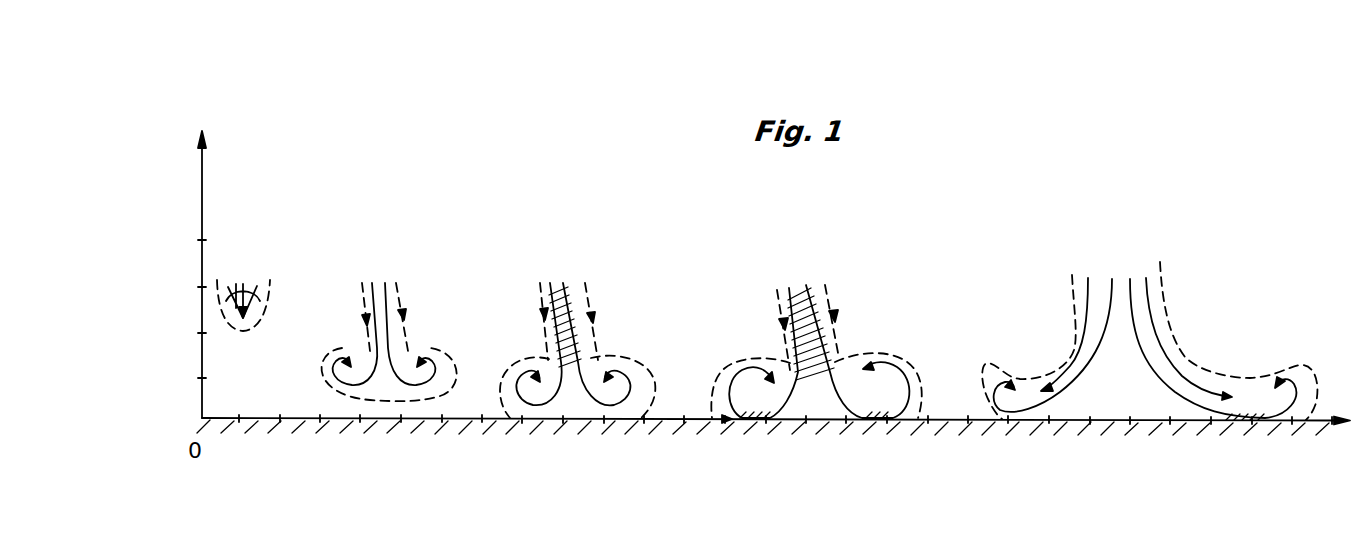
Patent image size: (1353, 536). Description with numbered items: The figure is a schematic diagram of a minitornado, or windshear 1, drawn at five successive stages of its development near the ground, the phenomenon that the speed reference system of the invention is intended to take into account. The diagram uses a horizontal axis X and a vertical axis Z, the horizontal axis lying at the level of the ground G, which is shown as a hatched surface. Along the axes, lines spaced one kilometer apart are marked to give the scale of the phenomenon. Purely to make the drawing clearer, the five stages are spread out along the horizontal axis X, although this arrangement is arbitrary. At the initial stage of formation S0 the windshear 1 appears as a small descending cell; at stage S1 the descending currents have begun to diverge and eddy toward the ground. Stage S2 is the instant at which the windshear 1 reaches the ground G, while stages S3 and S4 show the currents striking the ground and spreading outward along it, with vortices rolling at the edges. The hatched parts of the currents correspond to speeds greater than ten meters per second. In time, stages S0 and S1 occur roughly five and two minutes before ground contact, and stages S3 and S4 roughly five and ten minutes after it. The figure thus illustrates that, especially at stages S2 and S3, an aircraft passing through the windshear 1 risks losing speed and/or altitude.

The minitornado (windshear) 1 is at (767, 318).
The ground G is at (950, 410).
The initial stage of formation S0 is at (243, 272).
The development stage S1 is at (422, 323).
The development stage S2 is at (640, 300).
The development stage S3 is at (849, 325).
The development stage S4 is at (1203, 310).
The horizontal axis OX X is at (776, 433).
The vertical axis OZ Z is at (194, 268).